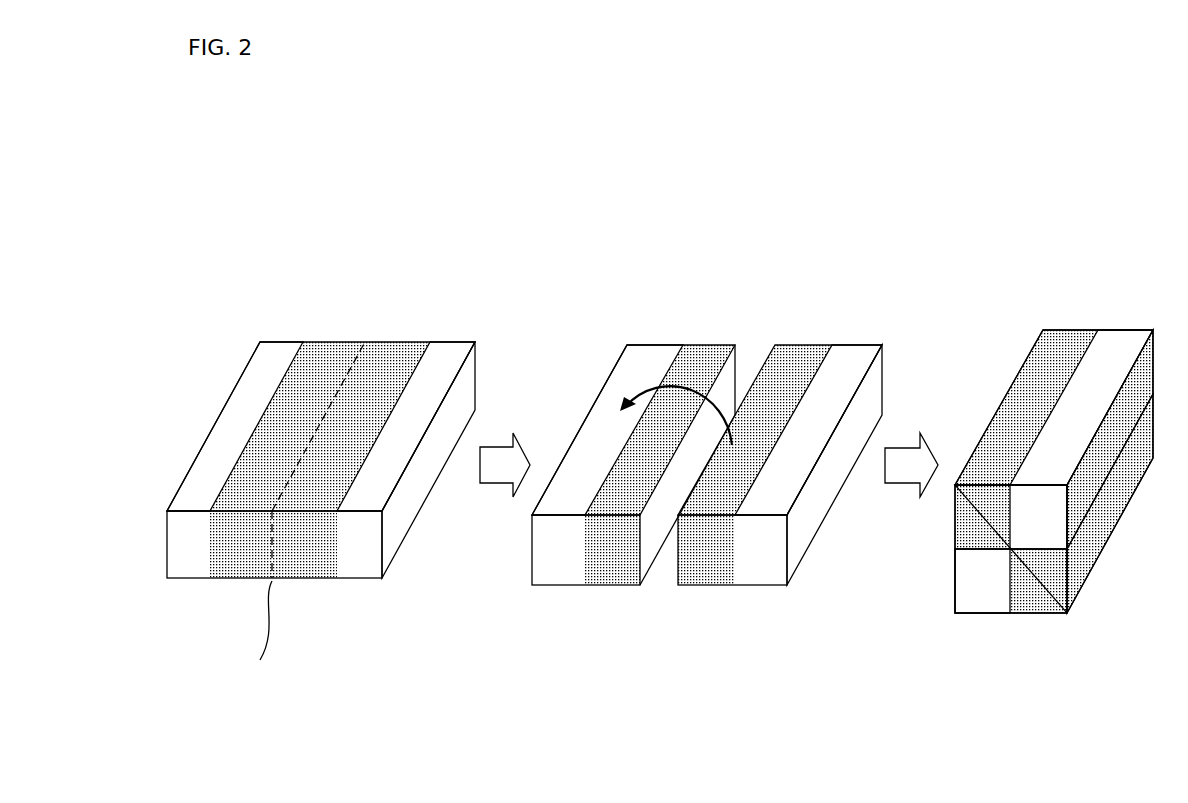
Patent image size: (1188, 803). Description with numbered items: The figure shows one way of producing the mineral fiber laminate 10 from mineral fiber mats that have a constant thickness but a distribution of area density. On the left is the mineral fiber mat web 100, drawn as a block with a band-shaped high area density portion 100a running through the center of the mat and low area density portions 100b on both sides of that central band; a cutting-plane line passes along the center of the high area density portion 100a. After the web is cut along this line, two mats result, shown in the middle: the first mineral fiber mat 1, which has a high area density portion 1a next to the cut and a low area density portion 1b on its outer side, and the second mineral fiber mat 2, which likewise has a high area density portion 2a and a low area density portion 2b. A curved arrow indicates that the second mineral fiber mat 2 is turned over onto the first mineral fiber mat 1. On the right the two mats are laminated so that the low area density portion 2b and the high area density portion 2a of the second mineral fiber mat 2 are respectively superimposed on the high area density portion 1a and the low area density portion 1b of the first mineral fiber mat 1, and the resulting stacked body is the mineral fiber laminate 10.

The mineral fiber mat web 100 is at (321, 398).
The high area density portion of mineral fiber mat web 100a is at (378, 355).
The low area density portion of mineral fiber mat web 100b is at (284, 355).
The first mineral fiber mat 1 is at (845, 433).
The high area density portion of first mineral fiber mat 1a is at (700, 358).
The low area density portion of first mineral fiber mat 1b is at (643, 358).
The second mineral fiber mat 2 is at (918, 357).
The high area density portion of second mineral fiber mat 2a is at (792, 358).
The low area density portion of second mineral fiber mat 2b is at (857, 358).
The mineral fiber laminate 10 is at (1128, 192).